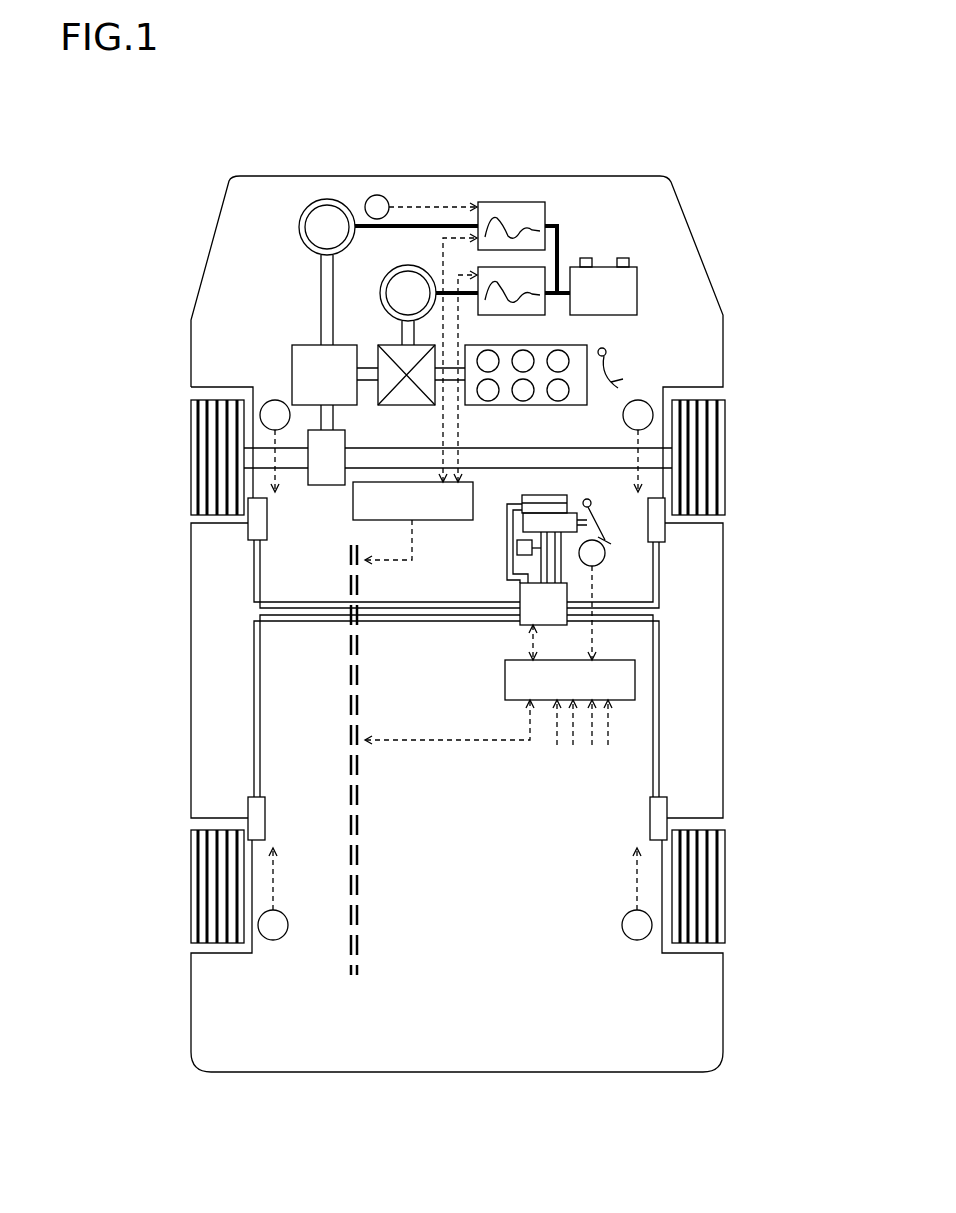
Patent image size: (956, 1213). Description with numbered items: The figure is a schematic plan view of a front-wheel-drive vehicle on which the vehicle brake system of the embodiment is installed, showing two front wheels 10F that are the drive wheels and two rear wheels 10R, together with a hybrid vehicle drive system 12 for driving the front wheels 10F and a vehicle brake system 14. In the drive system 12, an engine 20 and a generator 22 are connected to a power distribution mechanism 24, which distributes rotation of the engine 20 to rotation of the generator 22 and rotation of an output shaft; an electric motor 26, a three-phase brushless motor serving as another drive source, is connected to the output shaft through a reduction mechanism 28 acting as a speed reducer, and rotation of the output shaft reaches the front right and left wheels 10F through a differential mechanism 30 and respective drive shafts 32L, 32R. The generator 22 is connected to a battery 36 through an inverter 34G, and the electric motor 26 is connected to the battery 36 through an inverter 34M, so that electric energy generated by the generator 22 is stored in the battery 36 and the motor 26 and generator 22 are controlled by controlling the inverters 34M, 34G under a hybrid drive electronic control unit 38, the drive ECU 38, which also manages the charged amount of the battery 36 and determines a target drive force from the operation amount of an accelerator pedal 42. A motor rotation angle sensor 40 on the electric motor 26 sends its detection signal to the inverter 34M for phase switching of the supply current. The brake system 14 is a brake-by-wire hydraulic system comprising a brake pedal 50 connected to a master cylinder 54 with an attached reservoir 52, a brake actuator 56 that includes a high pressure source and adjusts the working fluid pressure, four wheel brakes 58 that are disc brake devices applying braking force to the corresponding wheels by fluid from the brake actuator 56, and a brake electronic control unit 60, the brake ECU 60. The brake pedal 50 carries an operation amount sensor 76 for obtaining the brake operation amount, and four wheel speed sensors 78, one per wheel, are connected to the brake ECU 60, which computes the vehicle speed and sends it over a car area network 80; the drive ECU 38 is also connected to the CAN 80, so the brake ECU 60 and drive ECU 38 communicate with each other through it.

The front wheels 10F is at (193, 410).
The rear wheels 10R is at (193, 845).
The hybrid vehicle drive system 12 is at (608, 212).
The vehicle brake system 14 is at (700, 655).
The engine 20 is at (545, 407).
The generator 22 is at (403, 272).
The power distribution mechanism 24 is at (405, 397).
The electric motor 26 is at (320, 210).
The reduction mechanism 28 is at (305, 352).
The differential mechanism 30 is at (330, 485).
The left drive shaft 32L is at (298, 458).
The right drive shaft 32R is at (488, 448).
The motor inverter 34M is at (505, 204).
The generator inverter 34G is at (518, 316).
The battery 36 is at (637, 282).
The hybrid drive electronic control unit 38 is at (430, 520).
The motor rotation angle sensor 40 is at (389, 203).
The accelerator pedal 42 is at (620, 385).
The brake pedal 50 is at (604, 542).
The reservoir 52 is at (532, 505).
The master cylinder 54 is at (570, 516).
The brake actuator 56 is at (523, 590).
The wheel brakes 58 is at (248, 530).
The brake electronic control unit 60 is at (505, 683).
The operation amount sensor 76 is at (603, 558).
The wheel speed sensors 78 is at (275, 400).
The car area network 80 is at (360, 835).